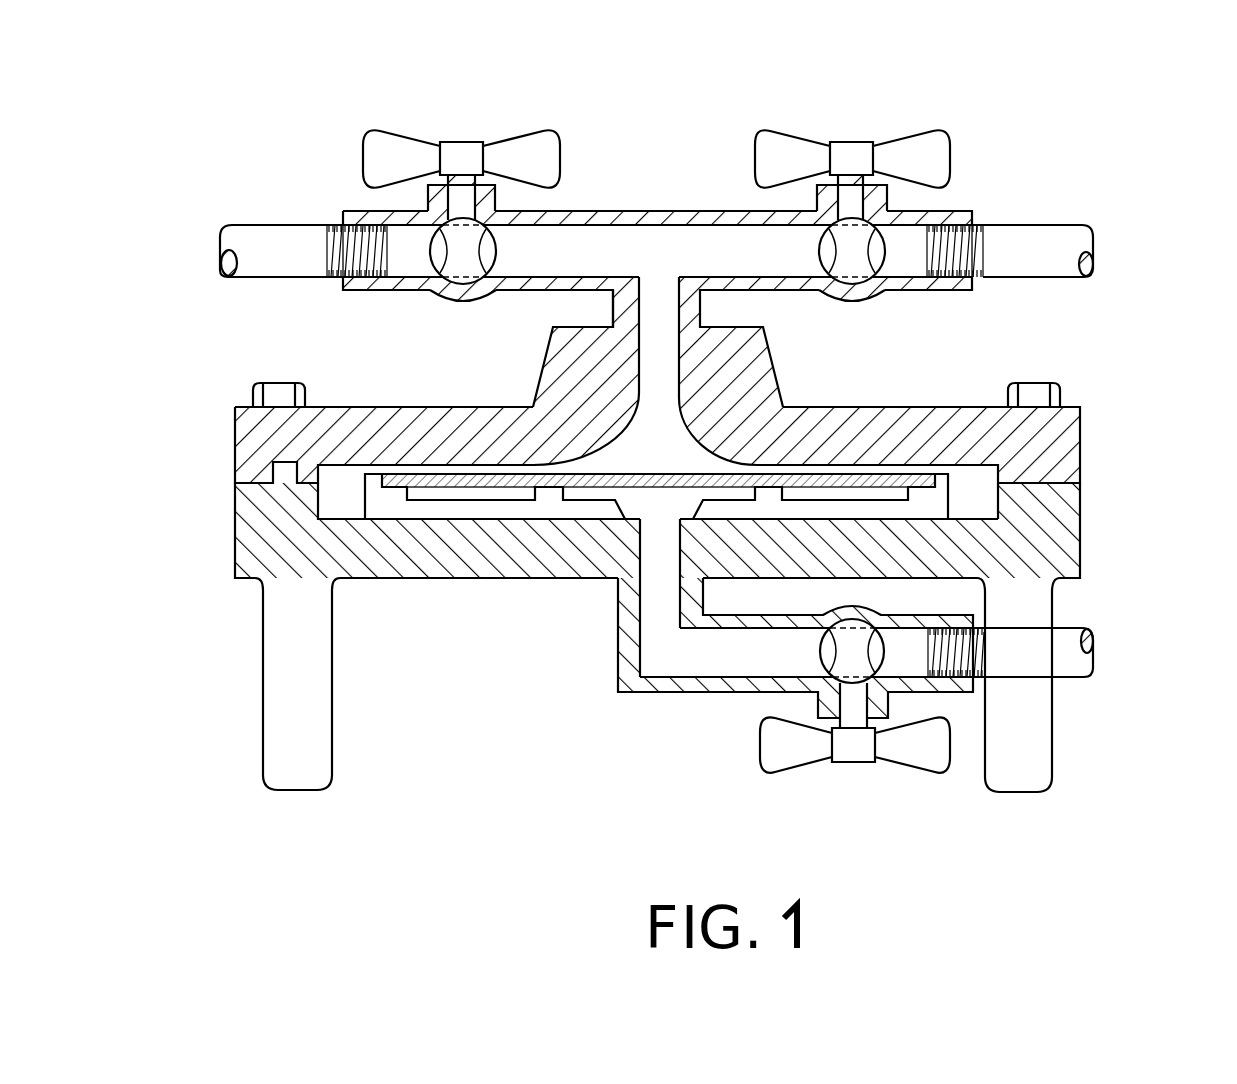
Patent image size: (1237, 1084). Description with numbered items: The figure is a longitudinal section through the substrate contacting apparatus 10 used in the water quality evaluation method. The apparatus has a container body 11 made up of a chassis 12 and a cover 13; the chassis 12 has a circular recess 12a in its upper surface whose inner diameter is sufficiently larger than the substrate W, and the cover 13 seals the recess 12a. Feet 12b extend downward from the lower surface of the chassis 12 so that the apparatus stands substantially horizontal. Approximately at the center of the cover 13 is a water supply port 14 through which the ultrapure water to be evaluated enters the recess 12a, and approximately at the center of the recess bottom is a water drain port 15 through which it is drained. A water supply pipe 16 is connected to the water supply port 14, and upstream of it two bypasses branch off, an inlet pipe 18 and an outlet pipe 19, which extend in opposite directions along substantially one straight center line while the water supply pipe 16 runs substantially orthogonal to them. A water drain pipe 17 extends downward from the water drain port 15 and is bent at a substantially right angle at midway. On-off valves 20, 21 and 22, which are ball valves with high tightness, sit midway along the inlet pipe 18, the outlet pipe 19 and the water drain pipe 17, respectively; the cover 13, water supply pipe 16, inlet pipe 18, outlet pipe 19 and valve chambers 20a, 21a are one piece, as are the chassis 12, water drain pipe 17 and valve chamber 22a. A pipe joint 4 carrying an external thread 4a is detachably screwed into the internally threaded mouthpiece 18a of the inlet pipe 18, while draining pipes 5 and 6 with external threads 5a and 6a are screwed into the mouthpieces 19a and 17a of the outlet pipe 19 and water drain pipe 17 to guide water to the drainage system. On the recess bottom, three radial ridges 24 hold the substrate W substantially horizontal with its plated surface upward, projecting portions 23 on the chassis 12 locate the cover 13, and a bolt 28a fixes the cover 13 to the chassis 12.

The pipe joint 4 is at (1063, 230).
The external thread 4a is at (967, 253).
The draining pipe 5 is at (259, 227).
The external thread 5a is at (333, 253).
The draining pipe 6 is at (1067, 623).
The external thread 6a is at (970, 648).
The substrate contacting apparatus 10 is at (1150, 302).
The container body 11 is at (1172, 410).
The chassis 12 is at (1072, 533).
The circular recess 12a is at (337, 518).
The feet 12b is at (278, 723).
The cover 13 is at (1072, 437).
The water supply port 14 is at (663, 377).
The water drain port 15 is at (640, 523).
The water supply pipe 16 is at (613, 298).
The water drain pipe 17 is at (648, 668).
The mouthpiece 17a is at (987, 680).
The inlet pipe 18 is at (721, 212).
The mouthpiece 18a is at (975, 277).
The outlet pipe 19 is at (598, 212).
The mouthpiece 19a is at (343, 224).
The on-off valve 20 is at (932, 123).
The valve chamber 20a is at (850, 297).
The on-off valve 21 is at (424, 127).
The valve chamber 21a is at (460, 297).
The on-off valve 22 is at (816, 781).
The valve chamber 22a is at (837, 607).
The projecting portion 23 is at (275, 458).
The radial ridge 24 is at (433, 507).
The bolt 28a is at (266, 383).
The substrate W is at (653, 464).